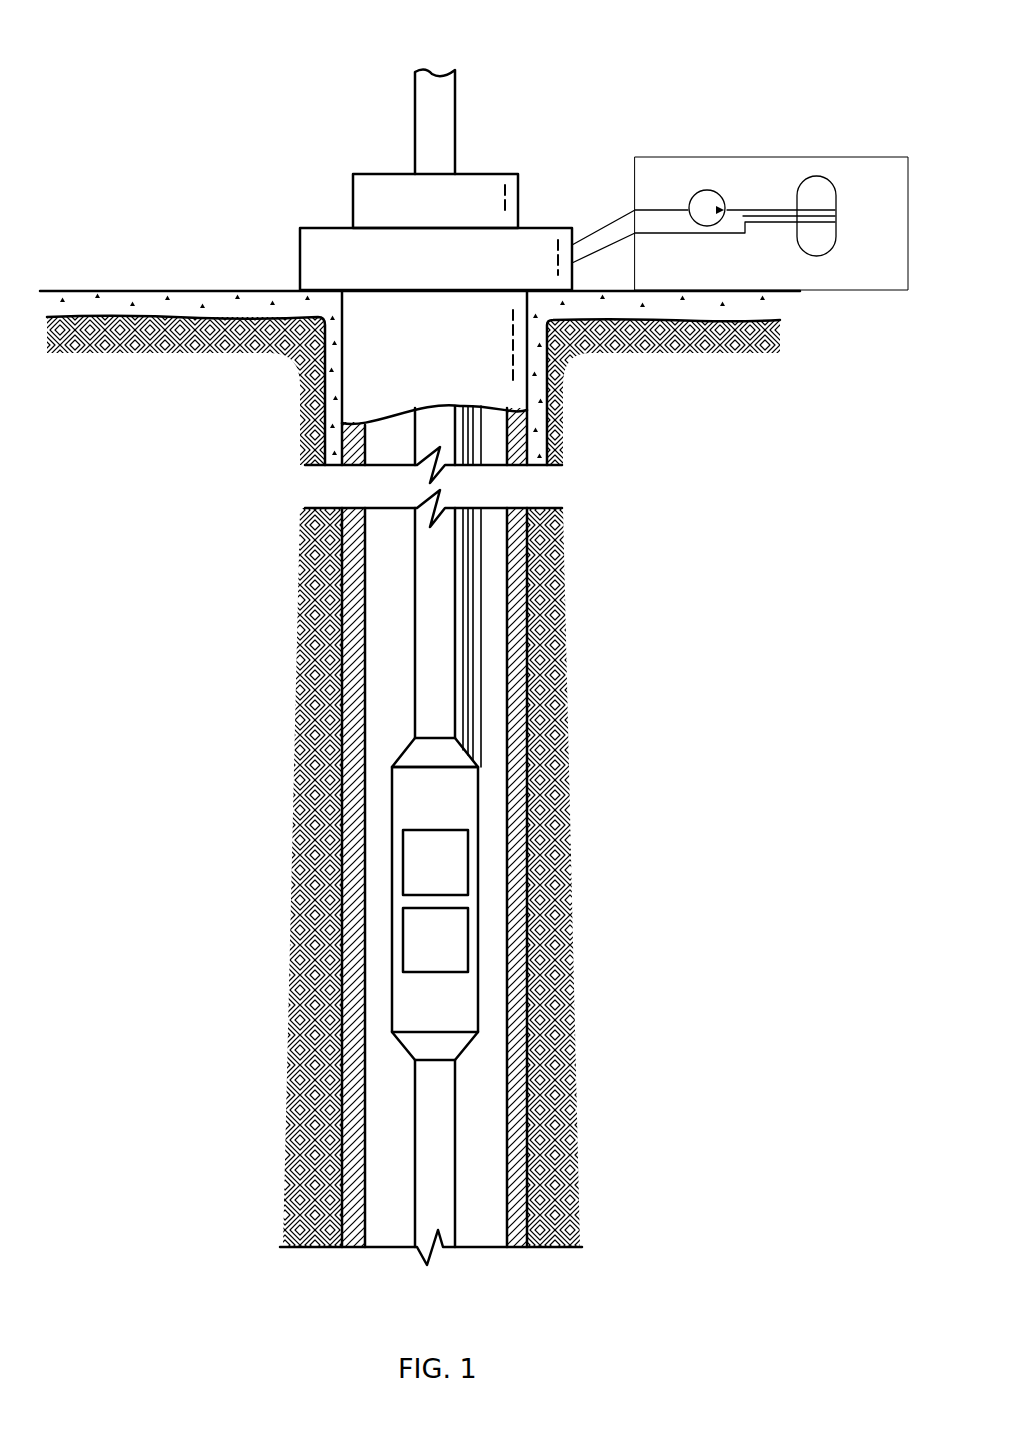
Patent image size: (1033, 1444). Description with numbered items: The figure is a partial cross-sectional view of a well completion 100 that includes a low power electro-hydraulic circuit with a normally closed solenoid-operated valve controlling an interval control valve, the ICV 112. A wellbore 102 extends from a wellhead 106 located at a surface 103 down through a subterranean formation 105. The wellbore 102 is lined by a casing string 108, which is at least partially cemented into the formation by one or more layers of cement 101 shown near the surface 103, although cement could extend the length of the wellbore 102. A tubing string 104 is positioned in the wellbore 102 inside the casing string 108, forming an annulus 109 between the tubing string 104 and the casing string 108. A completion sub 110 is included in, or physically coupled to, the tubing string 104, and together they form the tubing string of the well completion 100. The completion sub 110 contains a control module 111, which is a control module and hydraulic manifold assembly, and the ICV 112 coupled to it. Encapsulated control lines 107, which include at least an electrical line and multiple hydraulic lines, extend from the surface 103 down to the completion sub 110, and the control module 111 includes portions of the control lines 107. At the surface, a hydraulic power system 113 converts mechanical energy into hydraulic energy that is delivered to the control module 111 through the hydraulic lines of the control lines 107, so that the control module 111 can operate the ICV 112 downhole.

The well completion 100 is at (121, 38).
The cement 101 is at (215, 318).
The wellbore 102 is at (528, 578).
The surface 103 is at (158, 291).
The tubing string 104 is at (415, 562).
The subterranean formation 105 is at (186, 434).
The wellhead 106 is at (552, 216).
The encapsulated control lines 107 is at (484, 441).
The casing string 108 is at (352, 641).
The annulus 109 is at (488, 805).
The completion sub 110 is at (403, 753).
The control module 111 is at (453, 876).
The ICV 112 is at (453, 952).
The hydraulic power system 113 is at (743, 155).